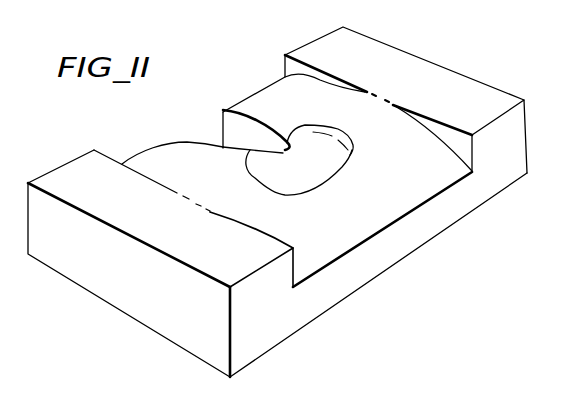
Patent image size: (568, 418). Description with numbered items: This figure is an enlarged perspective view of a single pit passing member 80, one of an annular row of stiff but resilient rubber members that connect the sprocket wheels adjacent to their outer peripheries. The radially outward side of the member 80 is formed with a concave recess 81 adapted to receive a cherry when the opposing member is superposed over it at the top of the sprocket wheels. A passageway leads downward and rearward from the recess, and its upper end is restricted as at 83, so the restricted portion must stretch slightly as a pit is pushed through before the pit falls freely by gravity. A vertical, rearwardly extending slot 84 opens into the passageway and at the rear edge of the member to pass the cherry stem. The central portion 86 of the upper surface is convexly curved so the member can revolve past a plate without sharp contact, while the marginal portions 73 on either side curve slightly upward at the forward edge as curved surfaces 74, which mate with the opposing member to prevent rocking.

The marginal portion 73 is at (68, 177).
The curved surface 74 is at (232, 272).
The pit passing member 80 is at (362, 262).
The concave recess 81 is at (308, 172).
The restricted portion 83 is at (280, 143).
The slot 84 is at (234, 126).
The central portion 86 is at (380, 216).